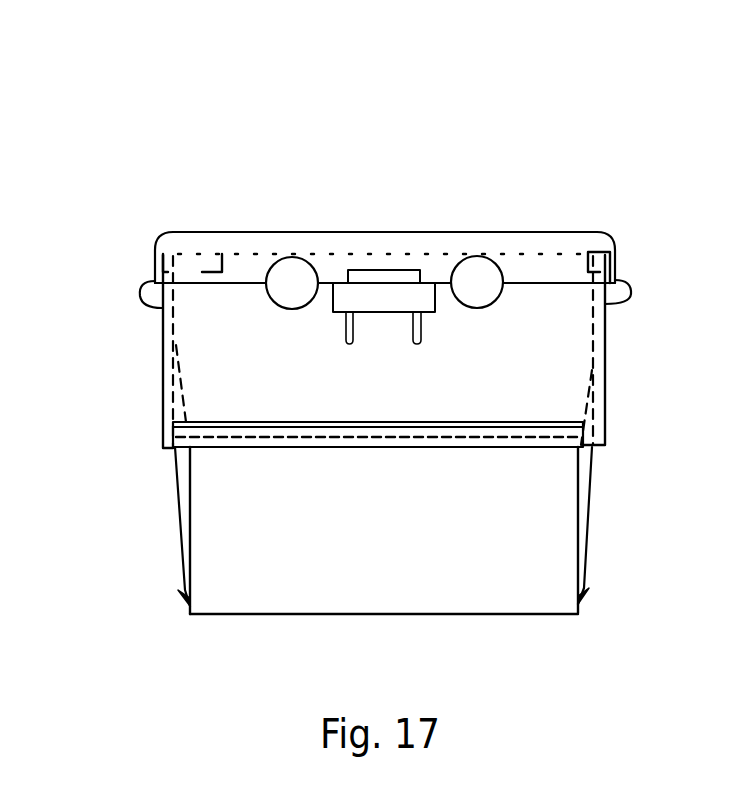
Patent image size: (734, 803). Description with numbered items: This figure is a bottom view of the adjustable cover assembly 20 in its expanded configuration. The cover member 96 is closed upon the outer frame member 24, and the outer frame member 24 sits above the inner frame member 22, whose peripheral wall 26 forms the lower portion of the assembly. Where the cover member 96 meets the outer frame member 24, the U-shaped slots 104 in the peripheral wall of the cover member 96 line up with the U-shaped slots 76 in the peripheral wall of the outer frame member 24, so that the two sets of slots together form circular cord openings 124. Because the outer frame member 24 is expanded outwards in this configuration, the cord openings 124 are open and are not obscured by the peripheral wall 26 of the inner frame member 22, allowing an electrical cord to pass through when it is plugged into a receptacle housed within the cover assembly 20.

The adjustable cover assembly 20 is at (198, 188).
The inner frame member 22 is at (587, 498).
The outer frame member 24 is at (607, 365).
The peripheral wall 26 is at (393, 530).
The U-shaped slots 76 is at (292, 314).
The cover member 96 is at (575, 232).
The U-shaped slots 104 is at (292, 250).
The circular cord openings 124 is at (290, 282).